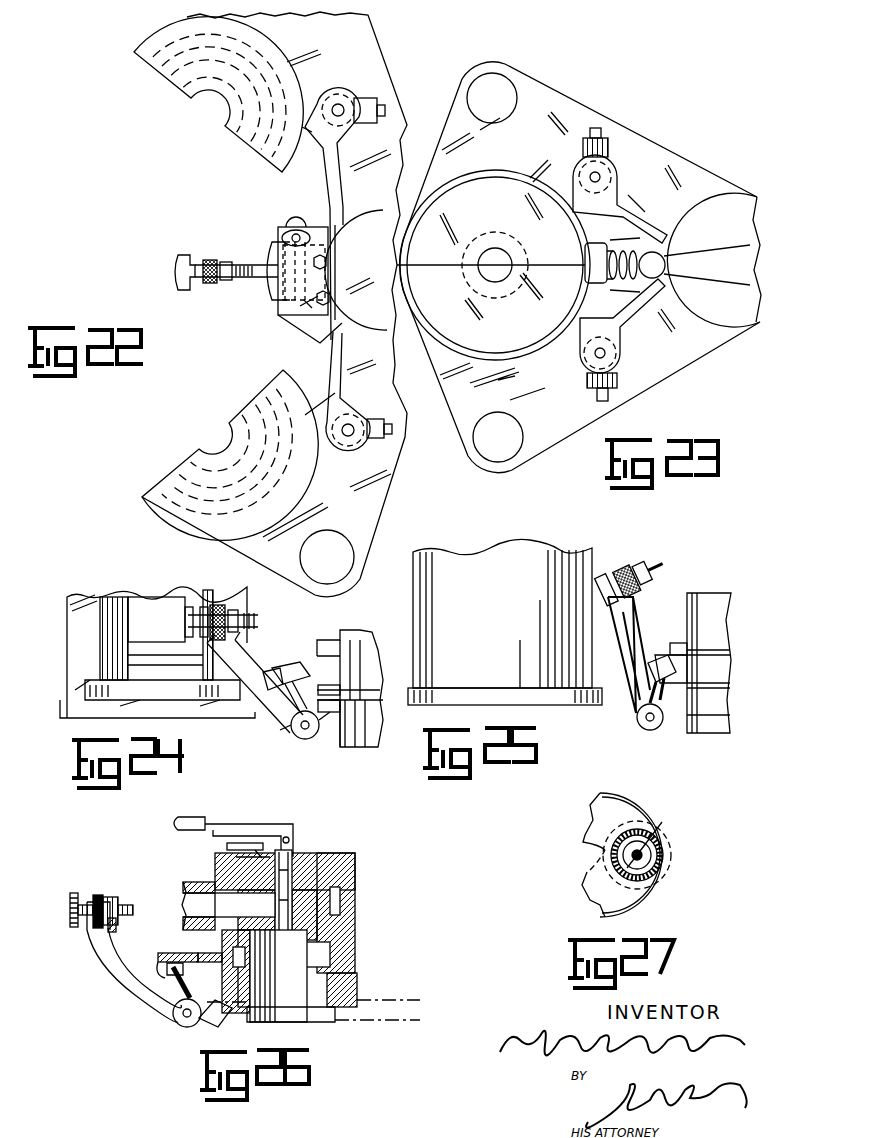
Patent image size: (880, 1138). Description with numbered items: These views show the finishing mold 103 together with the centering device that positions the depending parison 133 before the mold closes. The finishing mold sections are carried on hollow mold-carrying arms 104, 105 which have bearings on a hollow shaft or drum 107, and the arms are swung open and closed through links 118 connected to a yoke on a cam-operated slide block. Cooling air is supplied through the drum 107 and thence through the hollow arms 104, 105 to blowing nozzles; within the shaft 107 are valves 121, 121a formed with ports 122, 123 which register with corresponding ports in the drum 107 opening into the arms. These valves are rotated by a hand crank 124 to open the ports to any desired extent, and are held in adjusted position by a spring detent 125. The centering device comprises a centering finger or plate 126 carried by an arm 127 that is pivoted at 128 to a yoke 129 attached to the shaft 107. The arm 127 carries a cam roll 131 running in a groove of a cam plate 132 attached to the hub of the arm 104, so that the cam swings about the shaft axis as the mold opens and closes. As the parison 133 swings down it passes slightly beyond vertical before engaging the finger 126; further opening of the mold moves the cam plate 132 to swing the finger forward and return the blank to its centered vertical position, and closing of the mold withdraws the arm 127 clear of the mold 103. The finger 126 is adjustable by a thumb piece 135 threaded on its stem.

In FIG. 22, the finishing mold 103 is at (183, 96).
In FIG. 25, the finishing mold 103 is at (478, 558).
In FIG. 22, the mold-carrying arm 104 is at (334, 354).
In FIG. 23, the mold-carrying arm 104 is at (660, 376).
In FIG. 26, the mold-carrying arm 104 is at (318, 962).
In FIG. 27, the mold-carrying arm 104 is at (640, 898).
In FIG. 22, the mold-carrying arm 105 is at (330, 176).
In FIG. 23, the mold-carrying arm 105 is at (645, 150).
In FIG. 25, the mold-carrying arm 105 is at (665, 691).
In FIG. 26, the mold-carrying arm 105 is at (192, 882).
In FIG. 27, the mold-carrying arm 105 is at (611, 805).
In FIG. 24, the hollow shaft or drum 107 is at (365, 742).
In FIG. 26, the hollow shaft or drum 107 is at (340, 975).
In FIG. 22, the links 118 is at (378, 97).
In FIG. 23, the links 118 is at (602, 150).
In FIG. 26, the valve 121 is at (262, 975).
In FIG. 26, the valve 121a is at (343, 890).
In FIG. 26, the port 122 is at (318, 956).
In FIG. 27, the port 122 is at (668, 857).
In FIG. 26, the port 123 is at (262, 897).
In FIG. 27, the port 123 is at (636, 822).
In FIG. 23, the hand crank 124 is at (695, 255).
In FIG. 26, the hand crank 124 is at (196, 818).
In FIG. 26, the spring detent 125 is at (225, 845).
In FIG. 22, the centering finger 126 is at (175, 276).
In FIG. 24, the centering finger 126 is at (185, 623).
In FIG. 26, the centering finger 126 is at (70, 900).
In FIG. 24, the centering arm 127 is at (246, 657).
In FIG. 25, the centering arm 127 is at (635, 640).
In FIG. 26, the centering arm 127 is at (112, 968).
In FIG. 24, the pivot 128 is at (305, 740).
In FIG. 26, the pivot 128 is at (185, 1027).
In FIG. 22, the yoke 129 is at (323, 226).
In FIG. 26, the yoke 129 is at (205, 1027).
In FIG. 26, the cam roll 131 is at (168, 950).
In FIG. 22, the cam plate 132 is at (272, 292).
In FIG. 24, the cam plate 132 is at (305, 672).
In FIG. 26, the cam plate 132 is at (164, 960).
In FIG. 24, the parison 133 is at (123, 605).
In FIG. 26, the thumb piece 135 is at (96, 895).